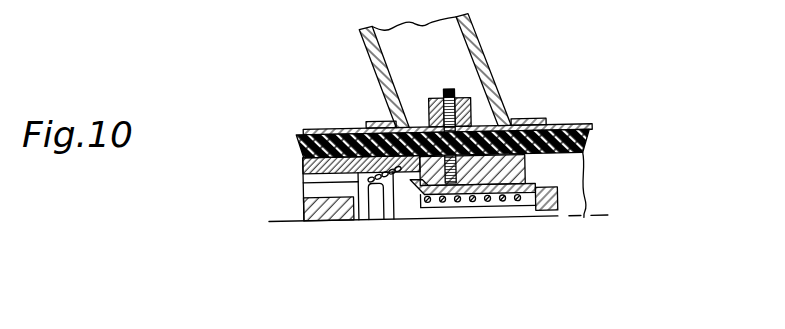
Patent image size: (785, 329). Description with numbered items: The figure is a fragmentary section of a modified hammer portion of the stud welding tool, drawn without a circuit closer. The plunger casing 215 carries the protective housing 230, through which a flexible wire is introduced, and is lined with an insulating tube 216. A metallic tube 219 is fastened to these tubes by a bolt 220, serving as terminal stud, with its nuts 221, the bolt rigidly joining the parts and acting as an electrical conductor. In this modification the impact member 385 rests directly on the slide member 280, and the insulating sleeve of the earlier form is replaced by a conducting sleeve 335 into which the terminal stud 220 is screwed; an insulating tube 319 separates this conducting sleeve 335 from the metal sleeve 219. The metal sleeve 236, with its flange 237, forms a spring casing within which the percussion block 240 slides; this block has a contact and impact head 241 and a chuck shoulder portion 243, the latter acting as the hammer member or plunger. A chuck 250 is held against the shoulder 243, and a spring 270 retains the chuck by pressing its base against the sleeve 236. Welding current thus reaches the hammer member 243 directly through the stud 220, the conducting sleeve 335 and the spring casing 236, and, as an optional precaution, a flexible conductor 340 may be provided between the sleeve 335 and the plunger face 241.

The protective housing 230 is at (483, 42).
The nuts 221 is at (430, 100).
The bolt 220 is at (453, 91).
The plunger casing 215 is at (568, 122).
The metallic tube 219 is at (310, 160).
The insulating tube 216 is at (590, 138).
The slide member 280 is at (303, 183).
The impact member 385 is at (315, 209).
The flexible conductor 340 is at (368, 213).
The contact and impact head 241 is at (369, 219).
The insulating tube 319 is at (402, 188).
The flange 237 is at (408, 178).
The conducting sleeve 335 is at (517, 168).
The chuck 250 is at (556, 182).
The percussion block 240 is at (415, 205).
The spring 270 is at (443, 219).
The metal sleeve 236 is at (467, 193).
The chuck shoulder portion 243 is at (518, 208).